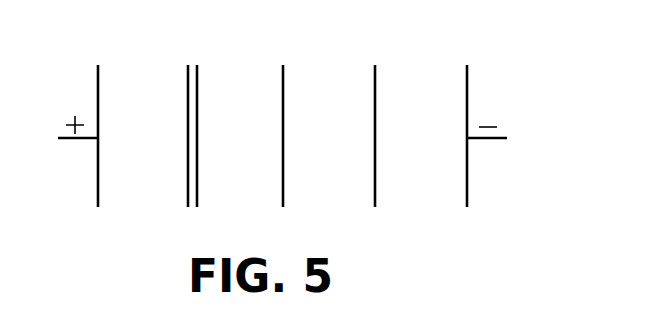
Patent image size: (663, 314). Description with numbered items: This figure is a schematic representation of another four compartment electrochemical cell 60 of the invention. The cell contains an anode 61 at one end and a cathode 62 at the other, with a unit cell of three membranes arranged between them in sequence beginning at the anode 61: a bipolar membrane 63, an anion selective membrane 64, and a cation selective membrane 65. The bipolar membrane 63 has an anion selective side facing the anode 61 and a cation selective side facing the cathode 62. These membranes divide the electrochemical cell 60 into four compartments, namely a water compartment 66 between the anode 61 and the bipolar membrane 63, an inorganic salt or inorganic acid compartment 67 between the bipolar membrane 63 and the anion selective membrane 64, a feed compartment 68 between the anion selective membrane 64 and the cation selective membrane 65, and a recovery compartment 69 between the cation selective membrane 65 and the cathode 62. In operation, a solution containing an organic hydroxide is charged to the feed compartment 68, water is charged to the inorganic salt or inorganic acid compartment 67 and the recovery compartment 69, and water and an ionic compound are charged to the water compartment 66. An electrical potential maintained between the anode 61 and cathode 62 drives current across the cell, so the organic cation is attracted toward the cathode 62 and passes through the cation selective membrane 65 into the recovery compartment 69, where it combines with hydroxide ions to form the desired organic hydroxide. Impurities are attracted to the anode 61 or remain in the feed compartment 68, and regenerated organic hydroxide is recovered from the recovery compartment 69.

The electrochemical cell 60 is at (522, 90).
The anode 61 is at (85, 123).
The cathode 62 is at (479, 123).
The bipolar membrane 63 is at (189, 139).
The anion selective membrane 64 is at (279, 139).
The cation selective membrane 65 is at (372, 139).
The water compartment 66 is at (142, 198).
The inorganic salt or inorganic acid compartment 67 is at (237, 198).
The feed compartment 68 is at (332, 198).
The recovery compartment 69 is at (418, 198).